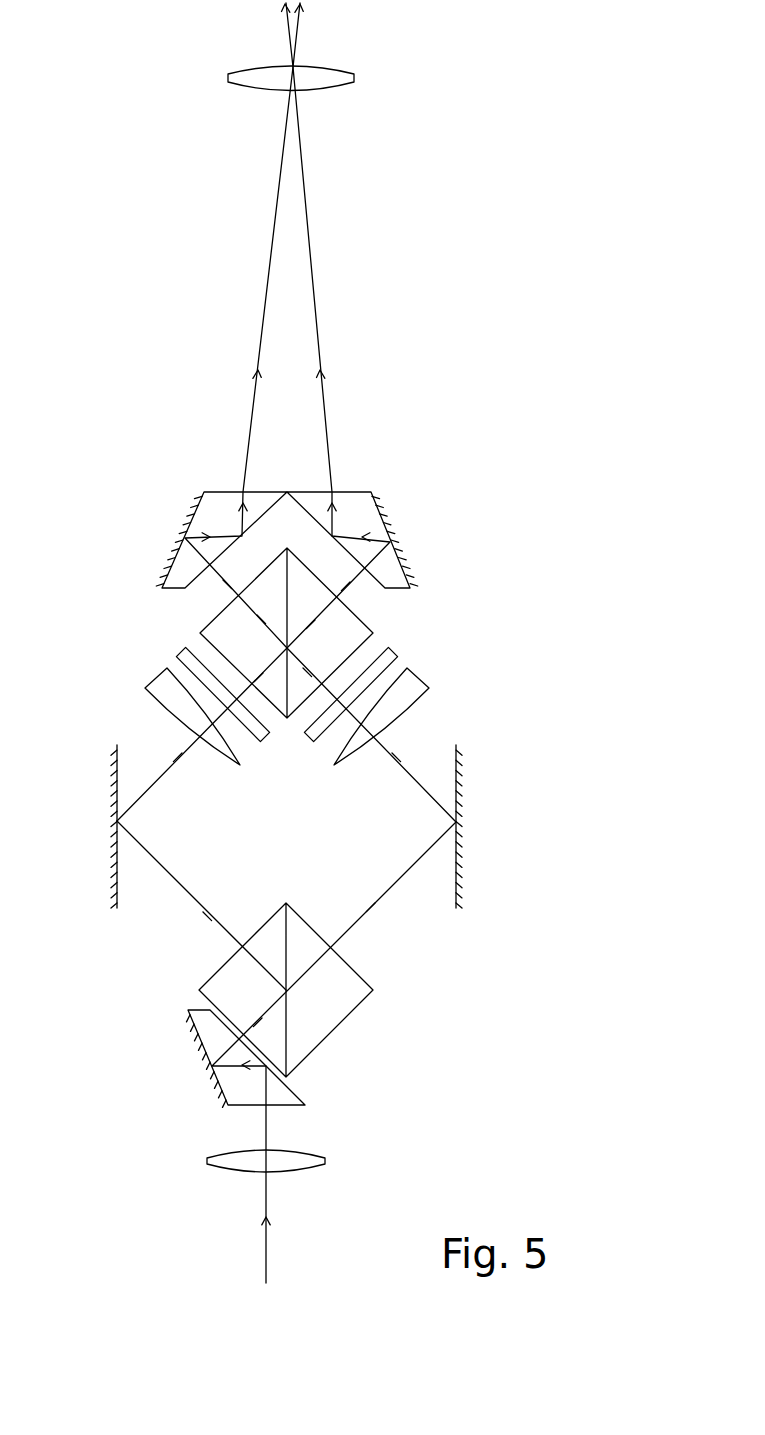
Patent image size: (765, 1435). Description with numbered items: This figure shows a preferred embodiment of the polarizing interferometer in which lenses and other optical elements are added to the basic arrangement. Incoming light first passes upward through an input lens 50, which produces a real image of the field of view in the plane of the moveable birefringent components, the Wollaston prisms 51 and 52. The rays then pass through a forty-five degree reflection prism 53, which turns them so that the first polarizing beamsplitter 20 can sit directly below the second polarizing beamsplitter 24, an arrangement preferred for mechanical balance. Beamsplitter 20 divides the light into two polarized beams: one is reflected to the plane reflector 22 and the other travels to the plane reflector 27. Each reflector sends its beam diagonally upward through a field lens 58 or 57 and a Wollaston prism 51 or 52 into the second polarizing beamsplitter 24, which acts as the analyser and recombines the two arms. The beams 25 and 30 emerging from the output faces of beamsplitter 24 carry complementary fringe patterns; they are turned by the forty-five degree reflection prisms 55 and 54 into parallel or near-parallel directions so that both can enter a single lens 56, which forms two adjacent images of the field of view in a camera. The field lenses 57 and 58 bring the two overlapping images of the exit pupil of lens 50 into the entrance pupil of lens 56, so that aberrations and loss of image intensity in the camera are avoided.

The first polarizing beamsplitter 20 is at (350, 1015).
The plane reflector 22 is at (118, 847).
The second polarizing beamsplitter 24 is at (362, 620).
The beam 25 is at (218, 572).
The plane reflector 27 is at (458, 792).
The light 30 is at (342, 585).
The input lens 50 is at (325, 1161).
The Wollaston prism 51 is at (185, 650).
The Wollaston prism 52 is at (392, 652).
The 45° reflection prism 53 is at (220, 1082).
The 45° reflection prism 54 is at (390, 518).
The 45° reflection prism 55 is at (192, 515).
The lens 56 is at (352, 72).
The field lens 57 is at (422, 682).
The field lens 58 is at (145, 685).